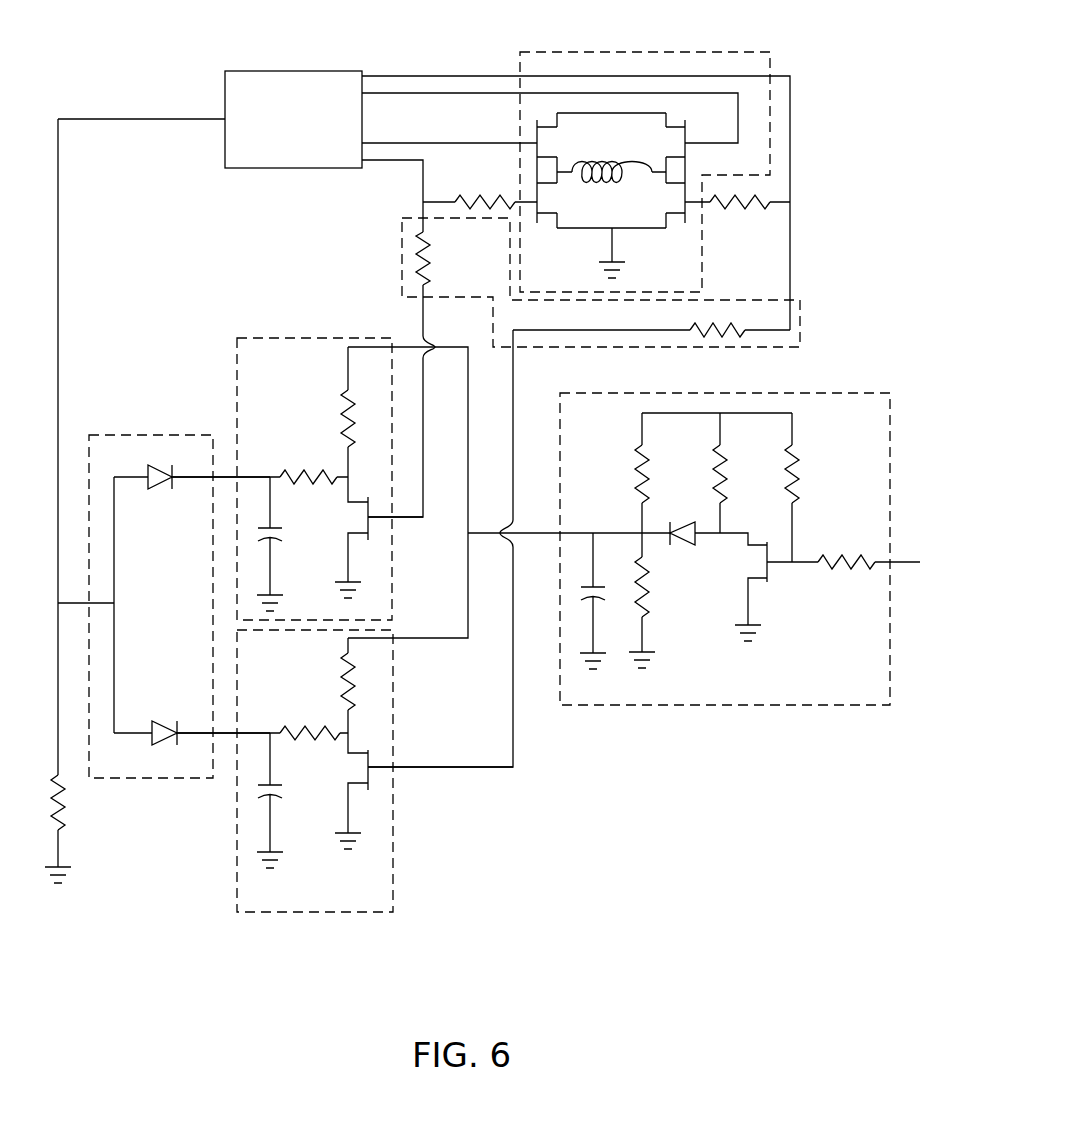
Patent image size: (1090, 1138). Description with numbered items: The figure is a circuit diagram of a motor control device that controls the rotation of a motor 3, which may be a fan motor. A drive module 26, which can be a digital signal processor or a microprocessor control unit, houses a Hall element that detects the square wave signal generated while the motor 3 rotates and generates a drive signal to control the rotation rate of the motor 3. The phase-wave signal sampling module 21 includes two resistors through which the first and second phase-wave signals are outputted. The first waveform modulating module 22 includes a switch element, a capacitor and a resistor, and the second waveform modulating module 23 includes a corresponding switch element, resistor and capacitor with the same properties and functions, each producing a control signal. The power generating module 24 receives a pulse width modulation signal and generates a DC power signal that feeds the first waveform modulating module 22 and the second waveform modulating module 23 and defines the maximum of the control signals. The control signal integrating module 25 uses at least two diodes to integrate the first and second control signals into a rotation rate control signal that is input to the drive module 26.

The drive module 26 is at (297, 70).
The motor 3 is at (648, 52).
The phase-wave signal sampling module 21 is at (800, 312).
The first waveform modulating module 22 is at (298, 338).
The second waveform modulating module 23 is at (395, 866).
The power generating module 24 is at (850, 393).
The control signal integrating module 25 is at (150, 435).